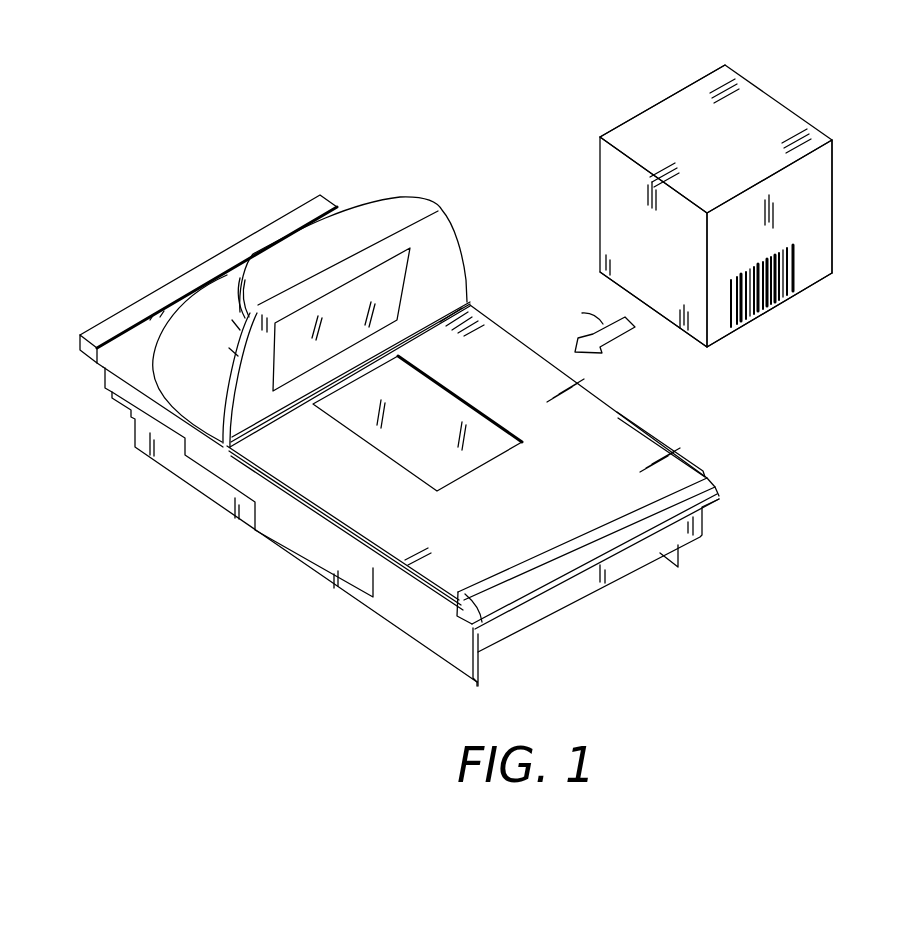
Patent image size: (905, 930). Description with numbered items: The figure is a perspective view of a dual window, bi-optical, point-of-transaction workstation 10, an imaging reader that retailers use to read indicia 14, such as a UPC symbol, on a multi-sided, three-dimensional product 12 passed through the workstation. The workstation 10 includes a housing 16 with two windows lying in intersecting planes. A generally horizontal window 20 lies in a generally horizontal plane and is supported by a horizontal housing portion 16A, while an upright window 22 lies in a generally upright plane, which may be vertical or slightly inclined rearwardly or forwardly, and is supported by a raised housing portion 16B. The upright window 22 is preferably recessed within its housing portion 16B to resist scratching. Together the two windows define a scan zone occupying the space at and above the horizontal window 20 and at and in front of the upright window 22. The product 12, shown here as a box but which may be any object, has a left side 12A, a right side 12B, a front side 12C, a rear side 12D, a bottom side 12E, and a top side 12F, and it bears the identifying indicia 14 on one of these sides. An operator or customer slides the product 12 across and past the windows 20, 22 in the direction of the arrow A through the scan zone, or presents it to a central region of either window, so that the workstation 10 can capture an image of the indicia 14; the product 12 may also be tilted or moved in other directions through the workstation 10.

The point-of-transaction workstation 10 is at (237, 583).
The product 12 is at (778, 103).
The left side 12A is at (670, 298).
The right side 12B is at (832, 222).
The front side 12C is at (797, 275).
The rear side 12D is at (672, 96).
The bottom side 12E is at (815, 280).
The top side 12F is at (687, 138).
The indicia 14 is at (755, 307).
The housing 16 is at (471, 304).
The horizontal housing portion 16A is at (382, 510).
The raised housing portion 16B is at (452, 223).
The horizontal window 20 is at (418, 442).
The upright window 22 is at (290, 365).